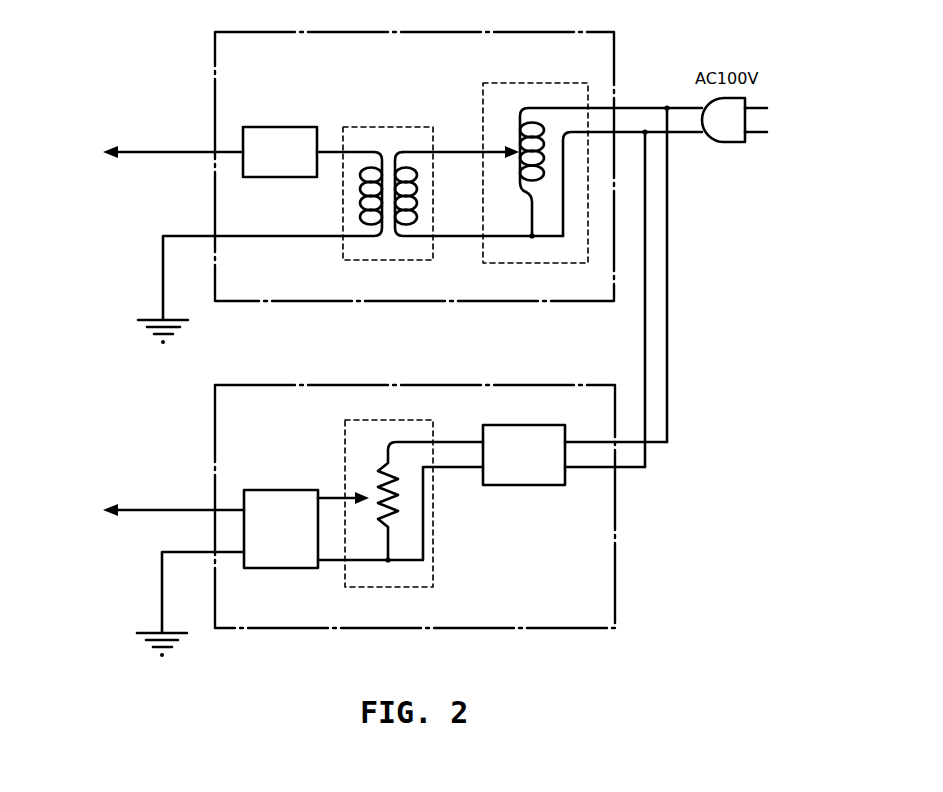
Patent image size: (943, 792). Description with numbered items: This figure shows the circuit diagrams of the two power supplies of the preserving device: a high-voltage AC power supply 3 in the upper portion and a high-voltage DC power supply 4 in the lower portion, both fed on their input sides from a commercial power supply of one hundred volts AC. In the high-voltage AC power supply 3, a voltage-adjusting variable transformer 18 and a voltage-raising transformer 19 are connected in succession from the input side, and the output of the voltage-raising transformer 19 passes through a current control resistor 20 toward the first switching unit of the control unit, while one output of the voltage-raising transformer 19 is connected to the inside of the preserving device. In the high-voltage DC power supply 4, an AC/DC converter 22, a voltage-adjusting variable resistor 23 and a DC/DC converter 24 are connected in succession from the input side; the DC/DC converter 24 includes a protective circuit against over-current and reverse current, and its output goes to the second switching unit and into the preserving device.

The high-voltage AC power supply 3 is at (338, 302).
The high-voltage DC power supply 4 is at (485, 383).
The voltage-adjusting variable transformer 18 is at (484, 105).
The voltage-raising transformer 19 is at (392, 128).
The current control resistor 20 is at (273, 126).
The AC/DC converter 22 is at (525, 485).
The voltage-adjusting variable resistor 23 is at (434, 552).
The DC/DC converter 24 is at (278, 489).